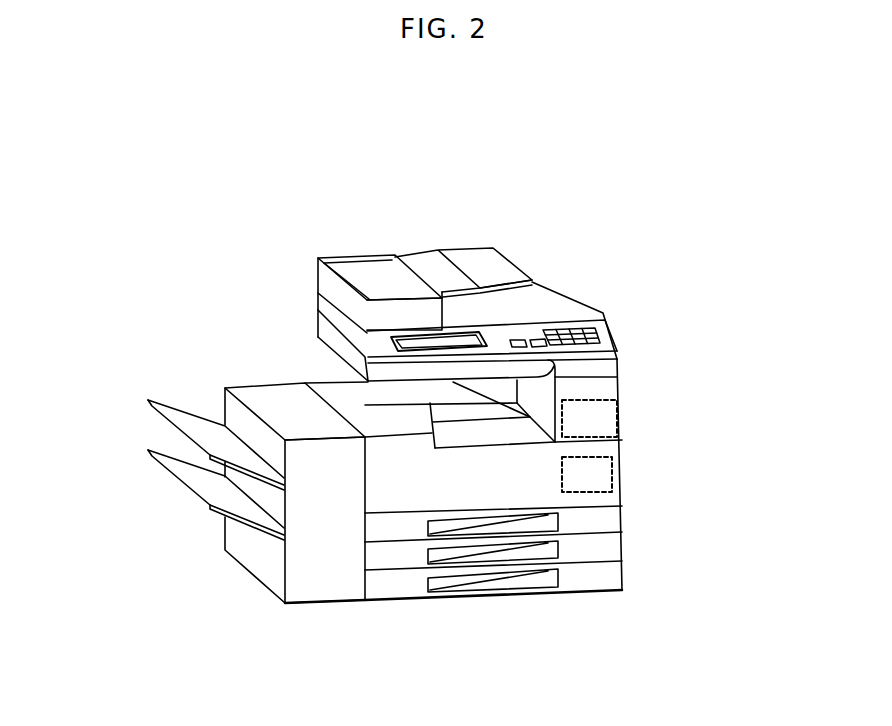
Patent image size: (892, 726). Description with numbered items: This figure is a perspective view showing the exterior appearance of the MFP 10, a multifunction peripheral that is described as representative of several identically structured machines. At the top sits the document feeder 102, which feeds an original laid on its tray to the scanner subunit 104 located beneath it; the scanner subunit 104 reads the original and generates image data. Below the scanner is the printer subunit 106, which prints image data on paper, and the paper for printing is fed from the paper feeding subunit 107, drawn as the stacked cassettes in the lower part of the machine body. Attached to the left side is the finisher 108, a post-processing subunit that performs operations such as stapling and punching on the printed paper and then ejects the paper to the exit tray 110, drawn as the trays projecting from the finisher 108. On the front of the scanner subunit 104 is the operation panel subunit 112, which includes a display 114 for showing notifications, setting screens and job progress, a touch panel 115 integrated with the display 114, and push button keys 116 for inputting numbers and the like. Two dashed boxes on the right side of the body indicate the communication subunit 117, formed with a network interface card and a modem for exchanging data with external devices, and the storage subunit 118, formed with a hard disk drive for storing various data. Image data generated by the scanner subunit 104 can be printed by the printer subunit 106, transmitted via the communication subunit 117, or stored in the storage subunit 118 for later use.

The MFP 10 is at (457, 121).
The document feeder 102 is at (433, 287).
The scanner subunit 104 is at (609, 316).
The printer subunit 106 is at (623, 437).
The paper feeding subunit 107 is at (623, 543).
The finisher 108 is at (260, 375).
The exit tray 110 is at (148, 450).
The operation panel subunit 112 is at (606, 258).
The display 114 is at (482, 342).
The touch panel 115 is at (462, 343).
The push button keys 116 is at (529, 335).
The communication subunit 117 is at (612, 468).
The storage subunit 118 is at (617, 403).